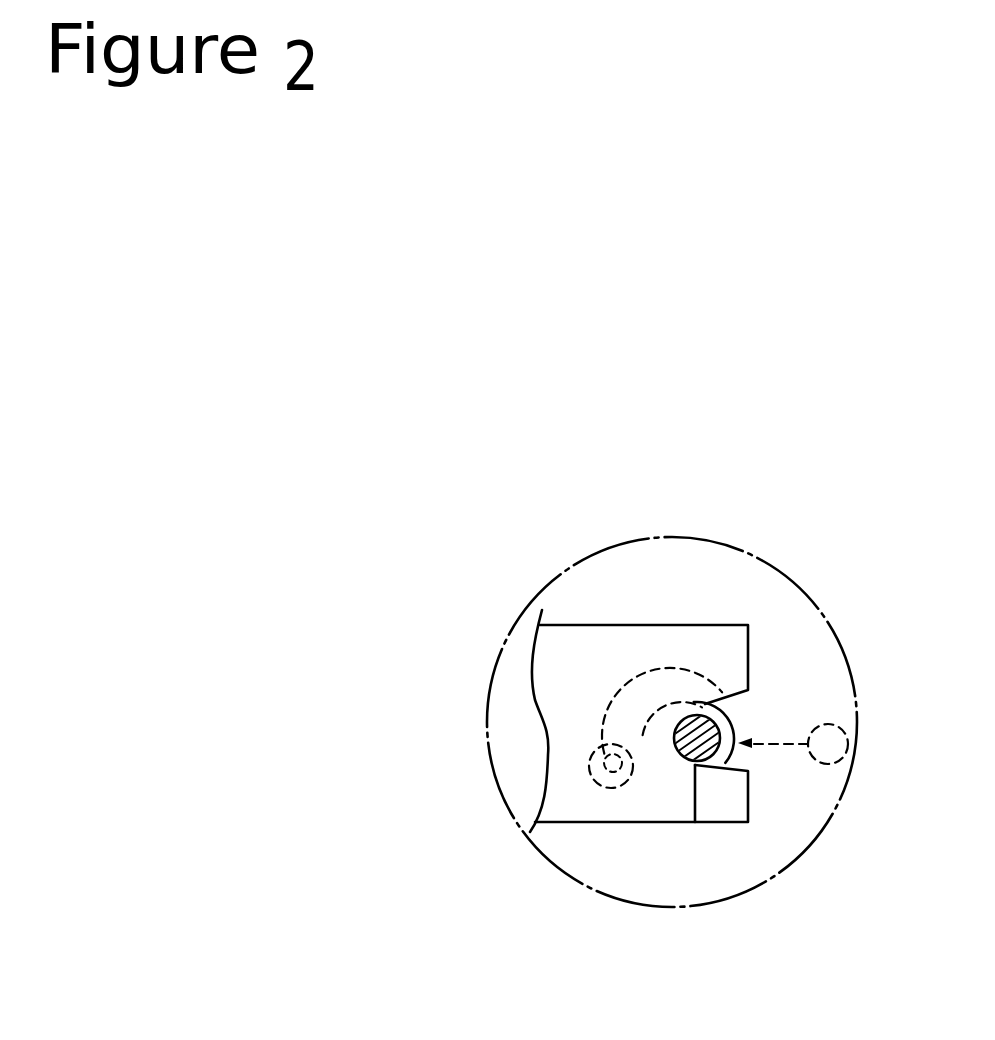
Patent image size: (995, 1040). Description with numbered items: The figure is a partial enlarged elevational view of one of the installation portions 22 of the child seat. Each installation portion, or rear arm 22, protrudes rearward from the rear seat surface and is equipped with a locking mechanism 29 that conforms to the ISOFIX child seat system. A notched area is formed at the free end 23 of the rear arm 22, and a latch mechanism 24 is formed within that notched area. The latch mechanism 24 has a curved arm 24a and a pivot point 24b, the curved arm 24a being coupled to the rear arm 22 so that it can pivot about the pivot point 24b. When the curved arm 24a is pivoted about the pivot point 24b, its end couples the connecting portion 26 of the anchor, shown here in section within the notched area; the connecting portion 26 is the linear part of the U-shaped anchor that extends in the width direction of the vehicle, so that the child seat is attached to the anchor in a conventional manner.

The installation portion 22 is at (720, 614).
The free end 23 is at (588, 653).
The latch mechanism 24 is at (637, 673).
The curved arm 24a is at (578, 741).
The pivot point 24b is at (620, 787).
The connecting portion 26 is at (694, 822).
The locking mechanism 29 is at (580, 702).